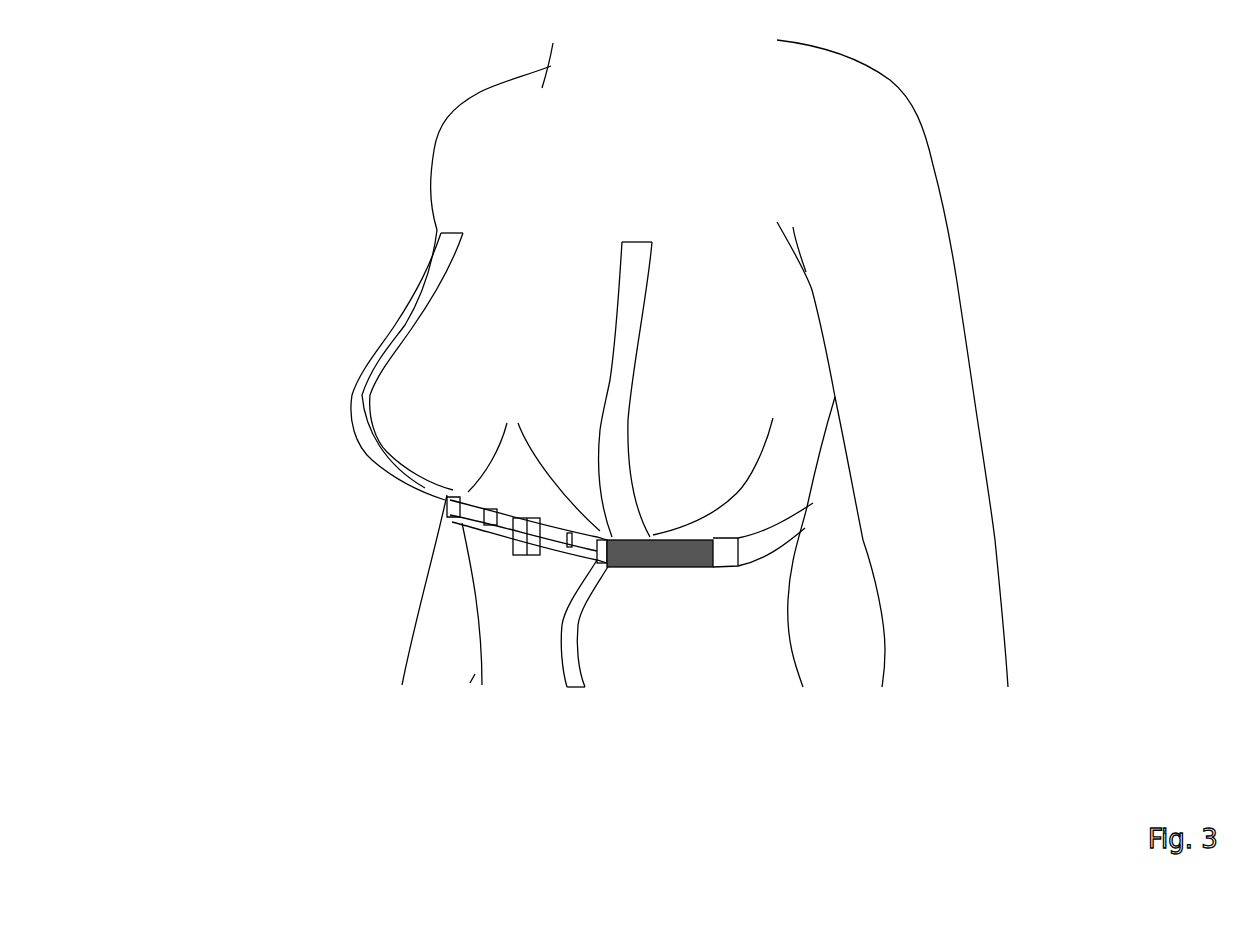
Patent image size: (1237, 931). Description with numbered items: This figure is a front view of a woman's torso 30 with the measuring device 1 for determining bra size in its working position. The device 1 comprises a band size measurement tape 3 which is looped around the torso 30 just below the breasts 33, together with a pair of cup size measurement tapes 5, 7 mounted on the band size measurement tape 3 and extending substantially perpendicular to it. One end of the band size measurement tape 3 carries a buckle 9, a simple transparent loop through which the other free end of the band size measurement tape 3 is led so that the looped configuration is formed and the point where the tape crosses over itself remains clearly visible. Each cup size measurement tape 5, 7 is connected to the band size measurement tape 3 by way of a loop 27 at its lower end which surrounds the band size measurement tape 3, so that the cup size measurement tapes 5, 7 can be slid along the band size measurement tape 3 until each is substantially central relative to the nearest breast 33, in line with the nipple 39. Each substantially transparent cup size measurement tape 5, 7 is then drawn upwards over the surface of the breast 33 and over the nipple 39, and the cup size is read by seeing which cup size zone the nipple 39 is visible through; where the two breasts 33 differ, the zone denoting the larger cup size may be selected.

The measuring device 1 is at (450, 560).
The band size measurement tape 3 is at (790, 528).
The cup size measurement tape 5 is at (647, 268).
The cup size measurement tape 7 is at (428, 285).
The buckle 9 is at (520, 543).
The loop 27 is at (450, 513).
The torso 30 is at (707, 610).
The breast 33 is at (438, 366).
The nipple 39 is at (357, 413).